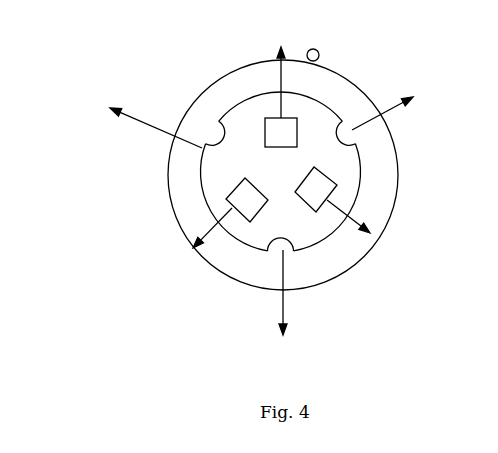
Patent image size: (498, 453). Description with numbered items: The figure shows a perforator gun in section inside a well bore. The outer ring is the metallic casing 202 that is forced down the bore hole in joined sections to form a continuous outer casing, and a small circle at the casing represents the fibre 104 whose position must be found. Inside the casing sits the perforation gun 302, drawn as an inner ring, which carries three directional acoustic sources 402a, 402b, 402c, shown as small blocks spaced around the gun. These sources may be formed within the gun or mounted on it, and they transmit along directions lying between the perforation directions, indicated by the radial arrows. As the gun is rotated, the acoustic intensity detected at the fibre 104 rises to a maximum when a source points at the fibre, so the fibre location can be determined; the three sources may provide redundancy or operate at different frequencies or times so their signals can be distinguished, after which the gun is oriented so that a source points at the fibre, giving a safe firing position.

The fibre 104 is at (318, 48).
The casing 202 is at (342, 273).
The perforation gun 302 is at (197, 183).
The directional acoustic source 402a is at (262, 123).
The directional acoustic source 402b is at (337, 192).
The directional acoustic source 402c is at (245, 213).